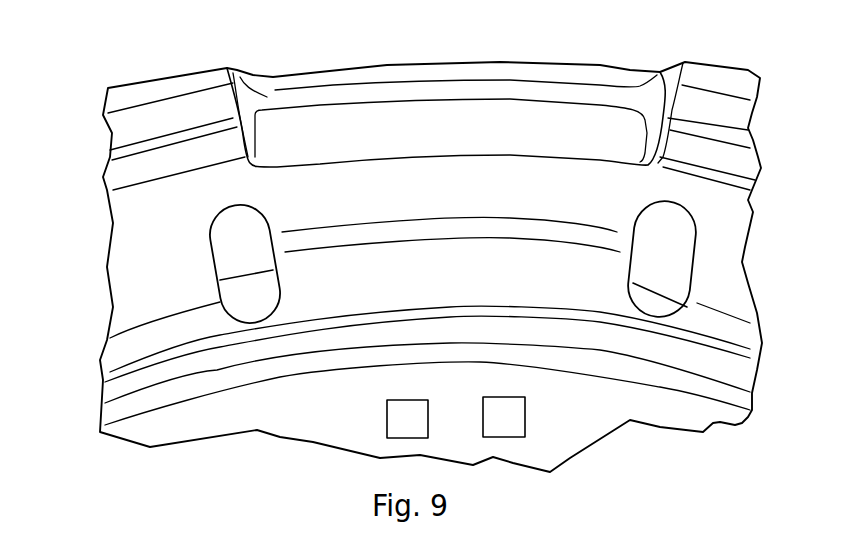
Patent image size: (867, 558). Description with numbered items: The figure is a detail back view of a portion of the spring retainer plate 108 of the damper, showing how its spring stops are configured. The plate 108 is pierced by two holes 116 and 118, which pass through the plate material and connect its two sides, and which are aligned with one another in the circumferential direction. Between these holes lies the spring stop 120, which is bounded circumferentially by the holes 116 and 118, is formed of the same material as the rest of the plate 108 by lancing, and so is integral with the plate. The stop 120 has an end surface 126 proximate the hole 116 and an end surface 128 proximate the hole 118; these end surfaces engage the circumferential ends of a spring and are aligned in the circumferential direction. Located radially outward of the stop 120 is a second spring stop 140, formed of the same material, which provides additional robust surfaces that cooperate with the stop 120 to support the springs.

The spring retainer plate 108 is at (727, 47).
The spring stop 140 is at (335, 100).
The spring stop 120 is at (298, 258).
The hole 118 is at (238, 253).
The end surface 128 is at (220, 280).
The hole 116 is at (660, 253).
The end surface 126 is at (687, 307).